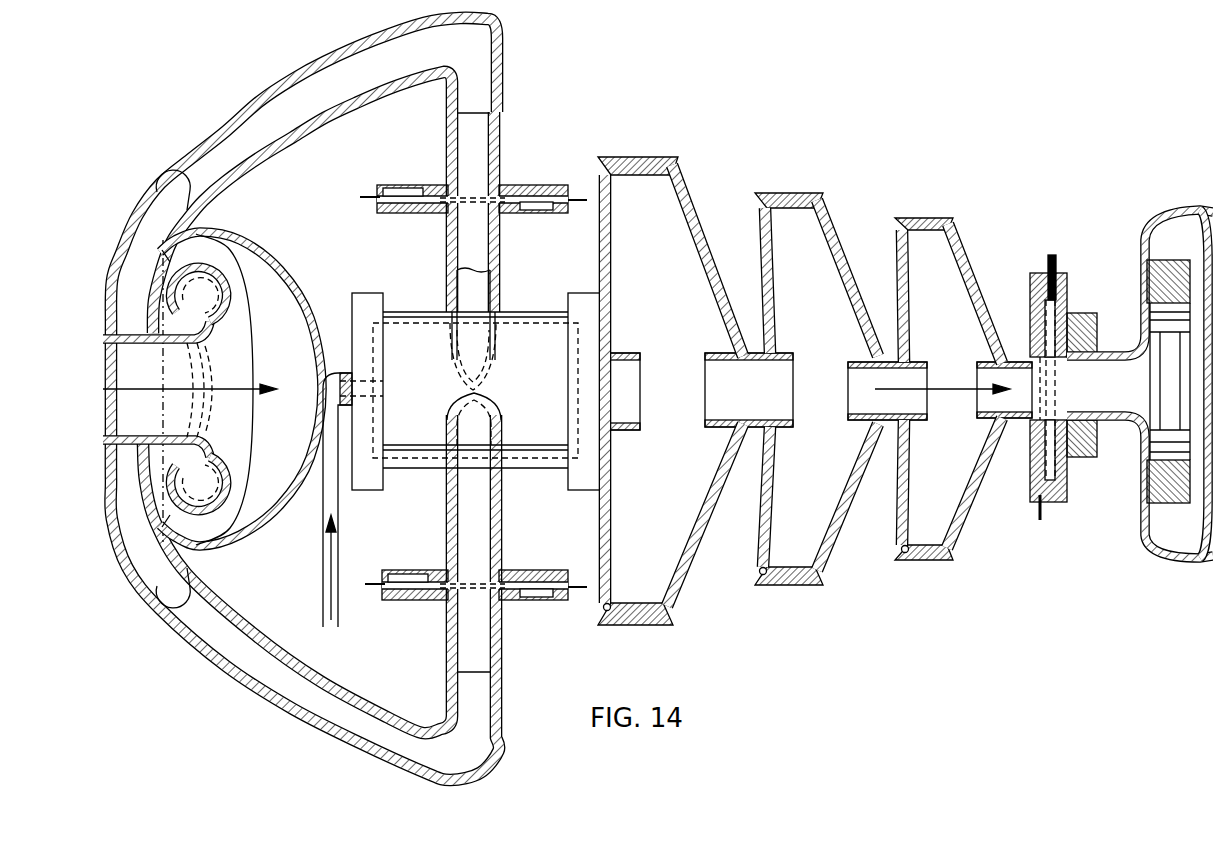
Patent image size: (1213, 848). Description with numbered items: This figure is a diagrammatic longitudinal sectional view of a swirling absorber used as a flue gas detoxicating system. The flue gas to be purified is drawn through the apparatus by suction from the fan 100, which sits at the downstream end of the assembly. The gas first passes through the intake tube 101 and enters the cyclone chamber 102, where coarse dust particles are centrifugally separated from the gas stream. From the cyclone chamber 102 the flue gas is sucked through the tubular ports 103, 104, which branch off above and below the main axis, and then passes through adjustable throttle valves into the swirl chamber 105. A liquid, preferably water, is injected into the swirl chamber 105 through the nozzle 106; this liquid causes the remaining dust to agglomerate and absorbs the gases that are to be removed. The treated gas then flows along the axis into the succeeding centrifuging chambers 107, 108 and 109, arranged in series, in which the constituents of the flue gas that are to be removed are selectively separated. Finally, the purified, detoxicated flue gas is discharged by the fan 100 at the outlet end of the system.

The fan 100 is at (1143, 240).
The intake tube 101 is at (104, 336).
The cyclone chamber 102 is at (268, 292).
The tubular port 103 is at (500, 289).
The tubular port 104 is at (497, 496).
The swirl chamber 105 is at (548, 394).
The nozzle 106 is at (372, 382).
The centrifuging chamber 107 is at (677, 202).
The centrifuging chamber 108 is at (820, 227).
The centrifuging chamber 109 is at (948, 248).